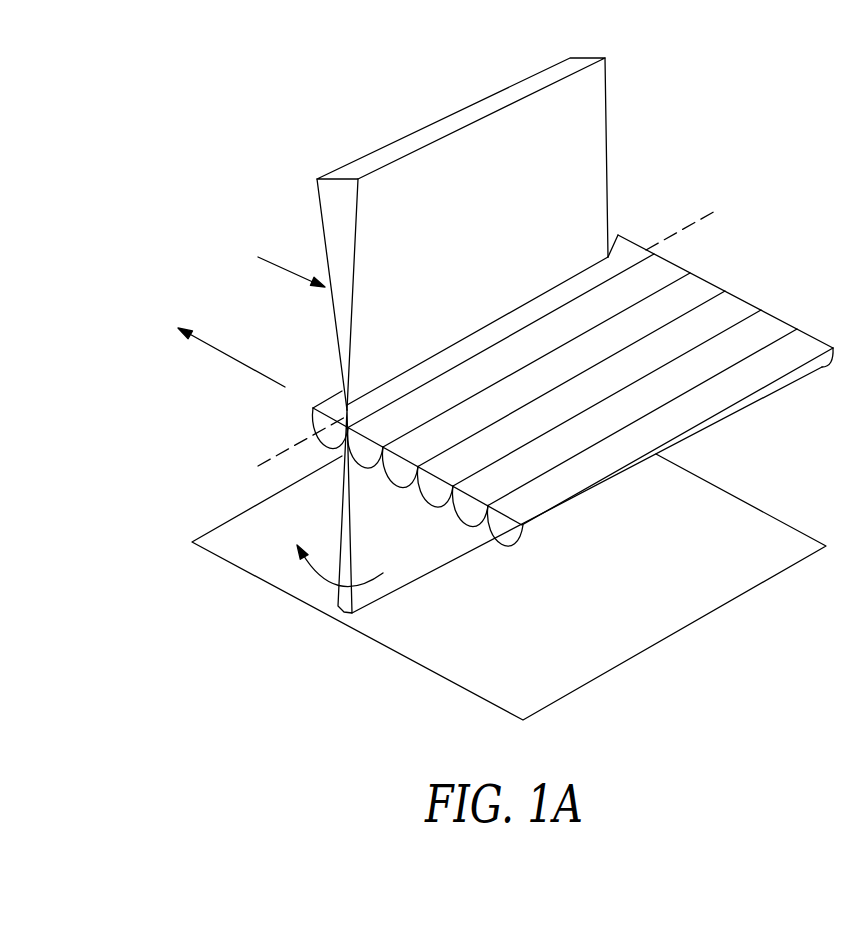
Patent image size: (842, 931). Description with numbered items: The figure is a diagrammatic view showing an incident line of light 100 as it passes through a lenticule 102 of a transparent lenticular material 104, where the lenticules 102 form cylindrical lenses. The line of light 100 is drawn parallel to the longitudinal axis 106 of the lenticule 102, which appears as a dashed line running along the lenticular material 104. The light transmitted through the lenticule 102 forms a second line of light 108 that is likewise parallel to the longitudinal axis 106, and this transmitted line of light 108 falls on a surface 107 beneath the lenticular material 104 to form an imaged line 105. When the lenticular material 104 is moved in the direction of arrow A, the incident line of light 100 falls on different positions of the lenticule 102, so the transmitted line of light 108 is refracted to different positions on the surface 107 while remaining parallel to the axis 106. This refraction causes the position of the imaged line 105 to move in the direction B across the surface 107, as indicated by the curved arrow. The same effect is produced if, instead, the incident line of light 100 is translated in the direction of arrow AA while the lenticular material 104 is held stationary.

The line of light 100 is at (380, 155).
The lenticule 102 is at (313, 411).
The transparent lenticular material 104 is at (582, 498).
The imaged line 105 is at (343, 597).
The longitudinal axis 106 is at (257, 466).
The surface 107 is at (518, 673).
The line of light 108 is at (428, 558).
The arrow A is at (212, 347).
The arrow AA is at (281, 265).
The direction B is at (323, 571).